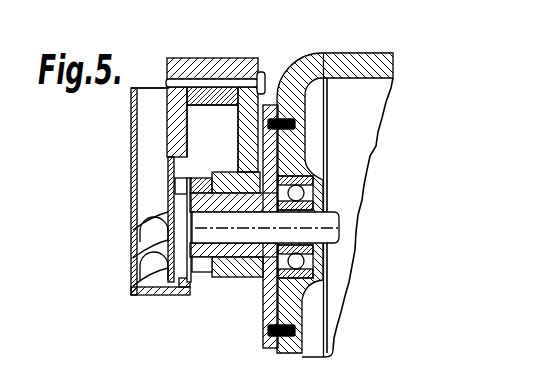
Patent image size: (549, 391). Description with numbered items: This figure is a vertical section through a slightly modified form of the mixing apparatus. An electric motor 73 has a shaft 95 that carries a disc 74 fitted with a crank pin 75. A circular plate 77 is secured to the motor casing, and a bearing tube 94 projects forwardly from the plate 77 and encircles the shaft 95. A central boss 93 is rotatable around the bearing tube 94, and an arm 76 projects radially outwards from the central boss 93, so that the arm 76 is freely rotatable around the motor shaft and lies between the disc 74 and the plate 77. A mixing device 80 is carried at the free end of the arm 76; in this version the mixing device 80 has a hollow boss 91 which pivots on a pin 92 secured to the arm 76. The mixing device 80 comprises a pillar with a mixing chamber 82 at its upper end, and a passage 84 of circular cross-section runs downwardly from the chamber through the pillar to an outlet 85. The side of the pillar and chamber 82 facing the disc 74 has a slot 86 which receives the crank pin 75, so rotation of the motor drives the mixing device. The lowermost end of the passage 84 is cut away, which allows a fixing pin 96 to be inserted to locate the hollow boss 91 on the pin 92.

The electric motor 73 is at (353, 72).
The disc 74 is at (195, 273).
The crank pin 75 is at (175, 185).
The arm 76 is at (263, 82).
The circular plate 77 is at (275, 302).
The mixing device 80 is at (130, 144).
The mixing chamber 82 is at (145, 277).
The passage 84 is at (143, 173).
The outlet 85 is at (150, 86).
The slot 86 is at (172, 238).
The hollow boss 91 is at (211, 107).
The pin 92 is at (218, 70).
The central boss 93 is at (245, 277).
The bearing tube 94 is at (223, 277).
The shaft 95 is at (322, 221).
The fixing pin 96 is at (187, 81).